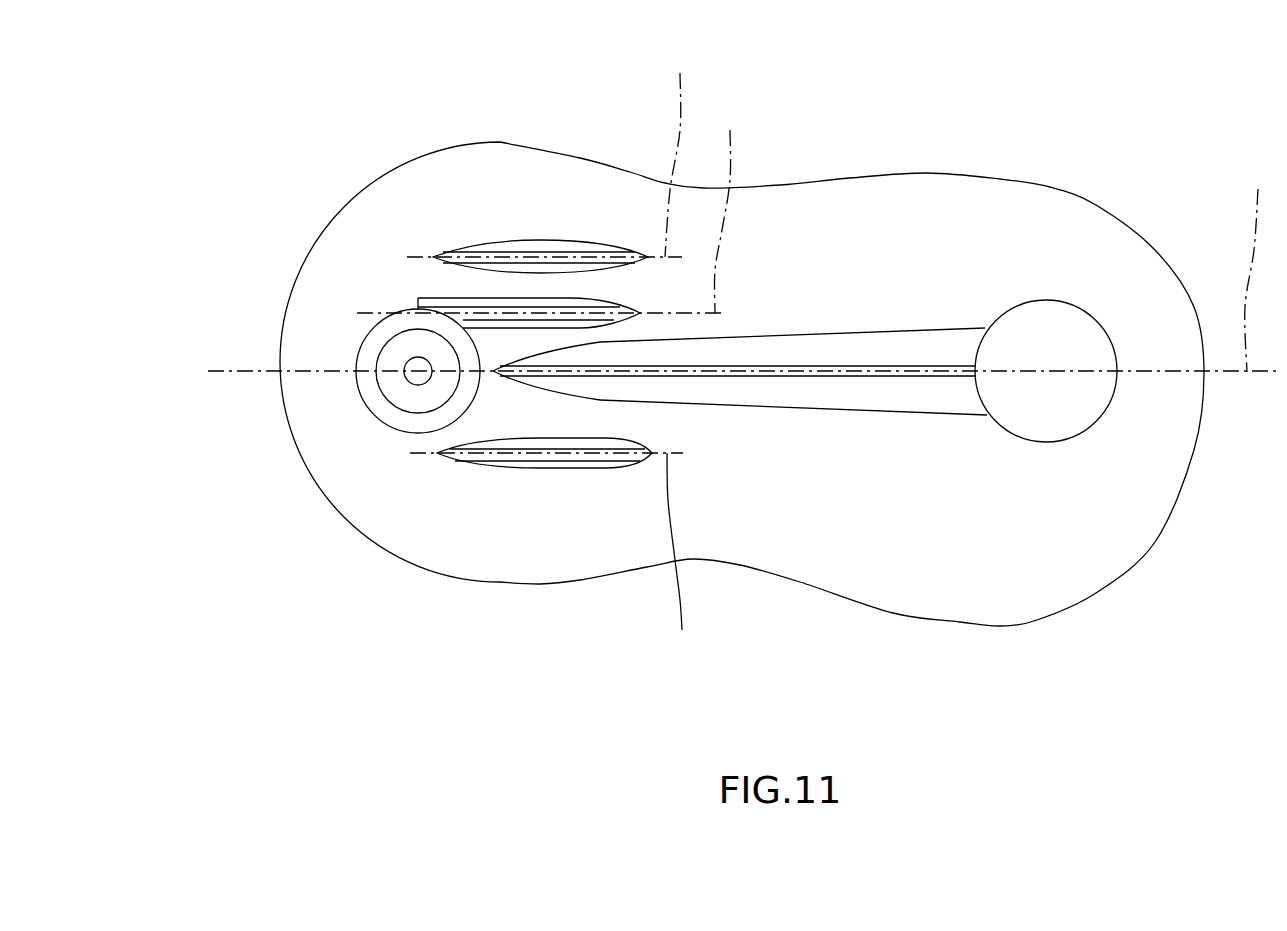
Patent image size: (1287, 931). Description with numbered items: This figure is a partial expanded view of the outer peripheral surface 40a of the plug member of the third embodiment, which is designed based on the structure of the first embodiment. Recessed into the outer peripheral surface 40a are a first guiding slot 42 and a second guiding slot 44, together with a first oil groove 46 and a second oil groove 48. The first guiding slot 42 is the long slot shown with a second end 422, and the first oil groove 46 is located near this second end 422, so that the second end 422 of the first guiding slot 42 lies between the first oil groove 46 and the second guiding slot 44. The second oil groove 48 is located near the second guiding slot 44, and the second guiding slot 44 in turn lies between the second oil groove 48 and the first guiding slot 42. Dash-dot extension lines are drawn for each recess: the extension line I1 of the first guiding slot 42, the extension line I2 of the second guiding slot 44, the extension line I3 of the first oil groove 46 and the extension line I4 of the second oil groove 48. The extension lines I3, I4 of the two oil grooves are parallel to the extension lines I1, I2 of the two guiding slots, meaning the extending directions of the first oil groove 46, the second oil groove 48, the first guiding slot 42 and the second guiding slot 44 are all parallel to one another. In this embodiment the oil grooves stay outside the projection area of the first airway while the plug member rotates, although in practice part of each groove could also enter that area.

The outer peripheral surface 40a is at (1012, 208).
The first guiding slot 42 is at (787, 407).
The second end 422 is at (492, 372).
The second guiding slot 44 is at (475, 298).
The first oil groove 46 is at (528, 468).
The second oil groove 48 is at (523, 243).
The extension line I1 is at (1258, 261).
The extension line I2 is at (727, 204).
The extension line I3 is at (680, 558).
The extension line I4 is at (677, 147).